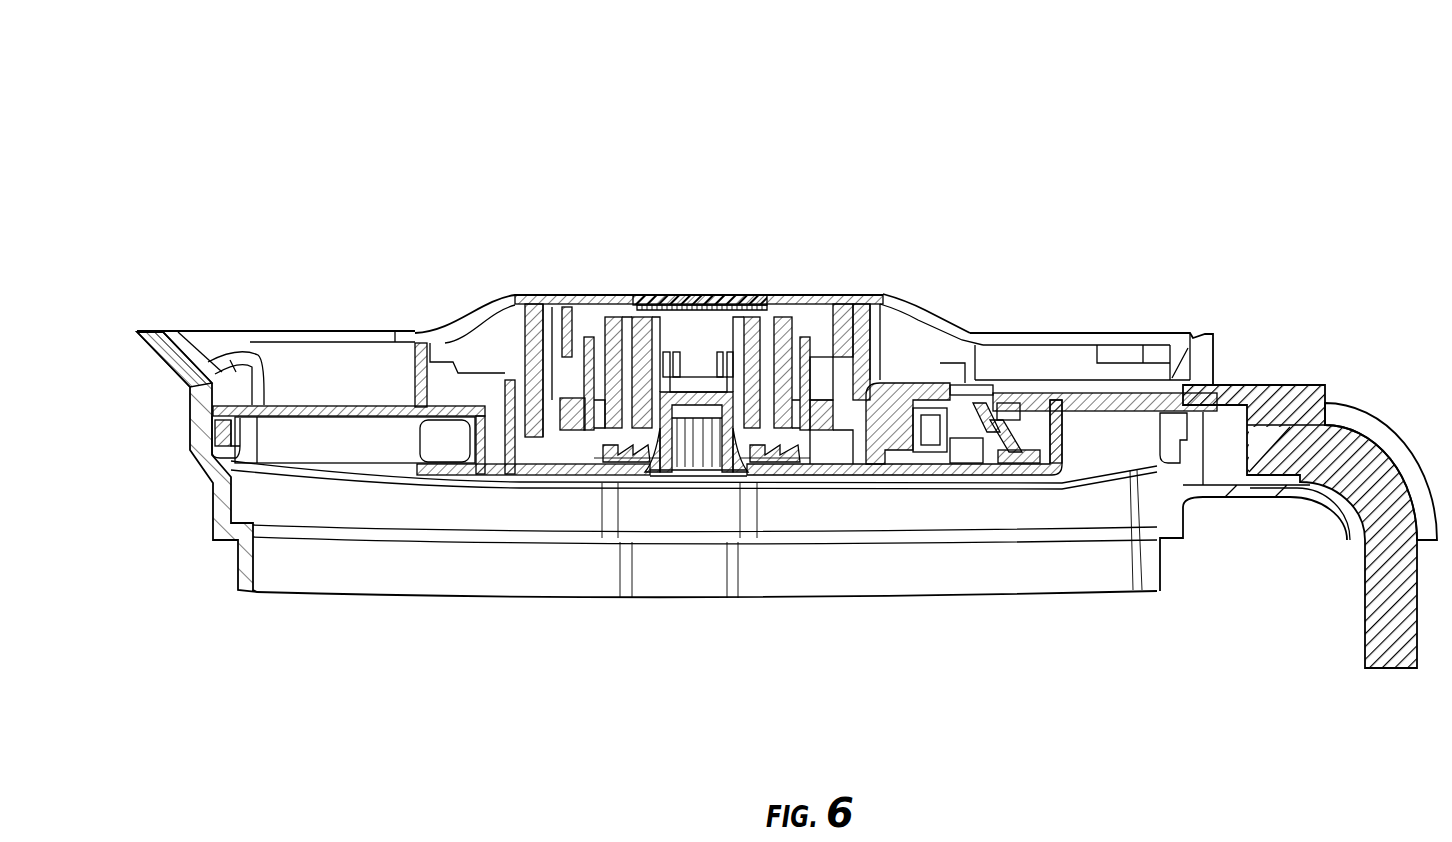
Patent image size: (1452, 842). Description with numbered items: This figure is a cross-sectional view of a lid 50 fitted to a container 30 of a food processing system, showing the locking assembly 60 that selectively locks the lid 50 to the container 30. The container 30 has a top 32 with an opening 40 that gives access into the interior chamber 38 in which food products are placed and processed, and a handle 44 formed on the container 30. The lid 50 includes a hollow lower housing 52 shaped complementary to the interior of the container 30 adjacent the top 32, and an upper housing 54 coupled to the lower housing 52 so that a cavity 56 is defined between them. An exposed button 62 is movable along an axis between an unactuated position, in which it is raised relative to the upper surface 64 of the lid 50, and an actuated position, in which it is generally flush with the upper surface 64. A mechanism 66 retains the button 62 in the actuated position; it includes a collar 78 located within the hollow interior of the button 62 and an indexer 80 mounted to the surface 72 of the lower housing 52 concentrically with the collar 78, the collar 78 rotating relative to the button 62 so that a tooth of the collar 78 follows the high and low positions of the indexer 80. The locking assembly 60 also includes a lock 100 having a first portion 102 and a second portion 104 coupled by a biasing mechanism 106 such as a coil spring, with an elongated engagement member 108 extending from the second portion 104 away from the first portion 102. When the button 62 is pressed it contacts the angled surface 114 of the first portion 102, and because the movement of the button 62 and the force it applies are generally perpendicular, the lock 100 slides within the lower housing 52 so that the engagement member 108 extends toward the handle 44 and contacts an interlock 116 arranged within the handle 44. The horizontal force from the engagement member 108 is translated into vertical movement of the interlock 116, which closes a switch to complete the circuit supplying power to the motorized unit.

The container 30 is at (217, 566).
The top 32 is at (152, 331).
The interior chamber 38 is at (390, 572).
The opening 40 is at (203, 392).
The handle 44 is at (1352, 430).
The lid 50 is at (397, 155).
The lower housing 52 is at (1017, 470).
The upper housing 54 is at (1120, 333).
The cavity 56 is at (498, 397).
The locking assembly 60 is at (935, 306).
The button 62 is at (583, 296).
The upper surface 64 is at (307, 331).
The mechanism 66 is at (797, 320).
The surface 72 is at (628, 466).
The collar 78 is at (613, 355).
The indexer 80 is at (798, 362).
The lock 100 is at (963, 386).
The first portion 102 is at (897, 450).
The second portion 104 is at (1036, 410).
The biasing mechanism 106 is at (1020, 427).
The engagement member 108 is at (1093, 402).
The surface 114 is at (843, 432).
The interlock 116 is at (1371, 468).